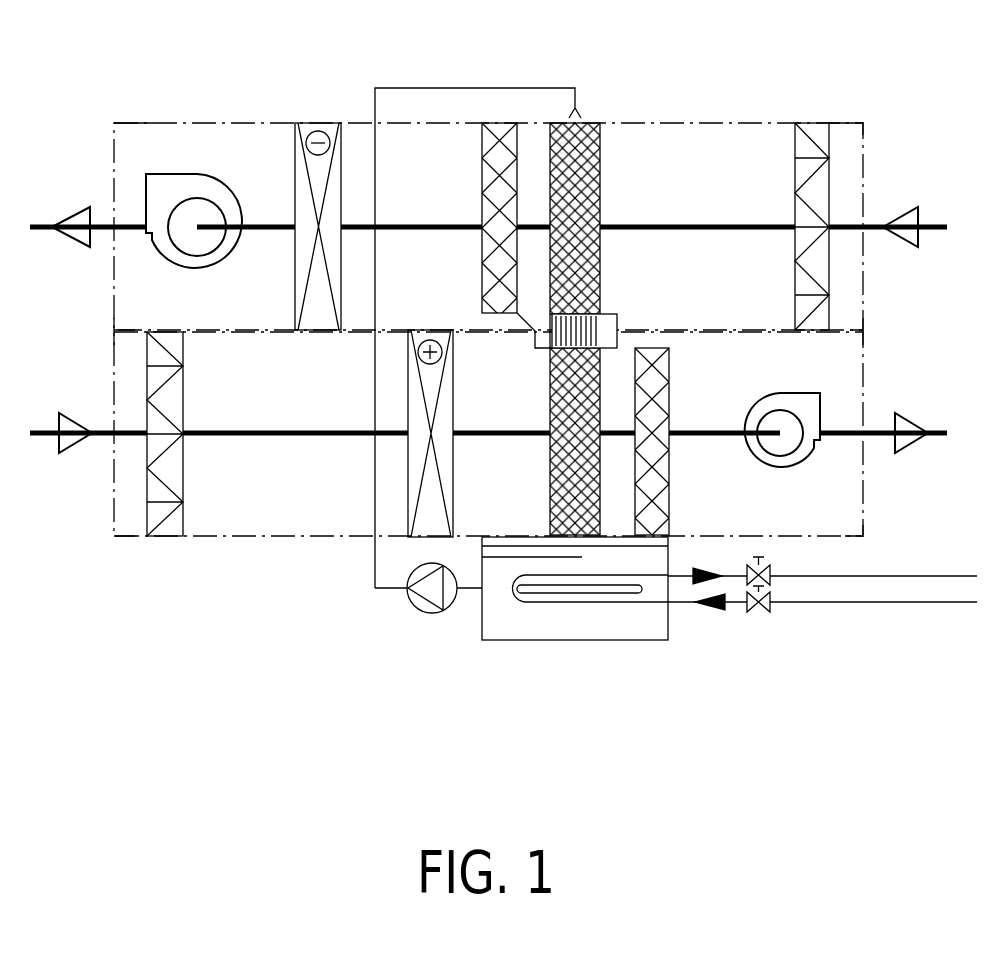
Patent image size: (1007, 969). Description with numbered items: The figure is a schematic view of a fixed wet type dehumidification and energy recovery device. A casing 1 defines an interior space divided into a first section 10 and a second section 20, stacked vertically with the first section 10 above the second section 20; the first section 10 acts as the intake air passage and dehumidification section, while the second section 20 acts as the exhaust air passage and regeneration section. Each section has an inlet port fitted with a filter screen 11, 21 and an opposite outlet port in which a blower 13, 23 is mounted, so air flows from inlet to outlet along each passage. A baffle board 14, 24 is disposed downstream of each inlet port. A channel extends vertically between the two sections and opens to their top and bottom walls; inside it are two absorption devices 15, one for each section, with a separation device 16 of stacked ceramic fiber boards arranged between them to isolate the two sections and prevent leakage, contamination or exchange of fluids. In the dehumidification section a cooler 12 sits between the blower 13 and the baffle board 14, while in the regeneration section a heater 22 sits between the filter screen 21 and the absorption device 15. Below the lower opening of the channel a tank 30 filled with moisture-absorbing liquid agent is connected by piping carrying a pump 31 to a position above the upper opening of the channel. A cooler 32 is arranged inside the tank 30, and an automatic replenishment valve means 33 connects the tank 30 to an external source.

The casing 1 is at (250, 101).
The first section 10 is at (695, 143).
The filter screen 11 is at (817, 130).
The cooler 12 is at (310, 128).
The blower 13 is at (170, 190).
The baffle board 14 is at (503, 128).
The absorption device 15 is at (588, 125).
The separation device 16 is at (587, 333).
The second section 20 is at (270, 517).
The filter screen 21 is at (158, 473).
The heater 22 is at (417, 473).
The blower 23 is at (792, 402).
The baffle board 24 is at (662, 480).
The tank 30 is at (602, 633).
The pump 31 is at (427, 605).
The cooler 32 is at (560, 602).
The automatic replenishment valve means 33 is at (757, 608).